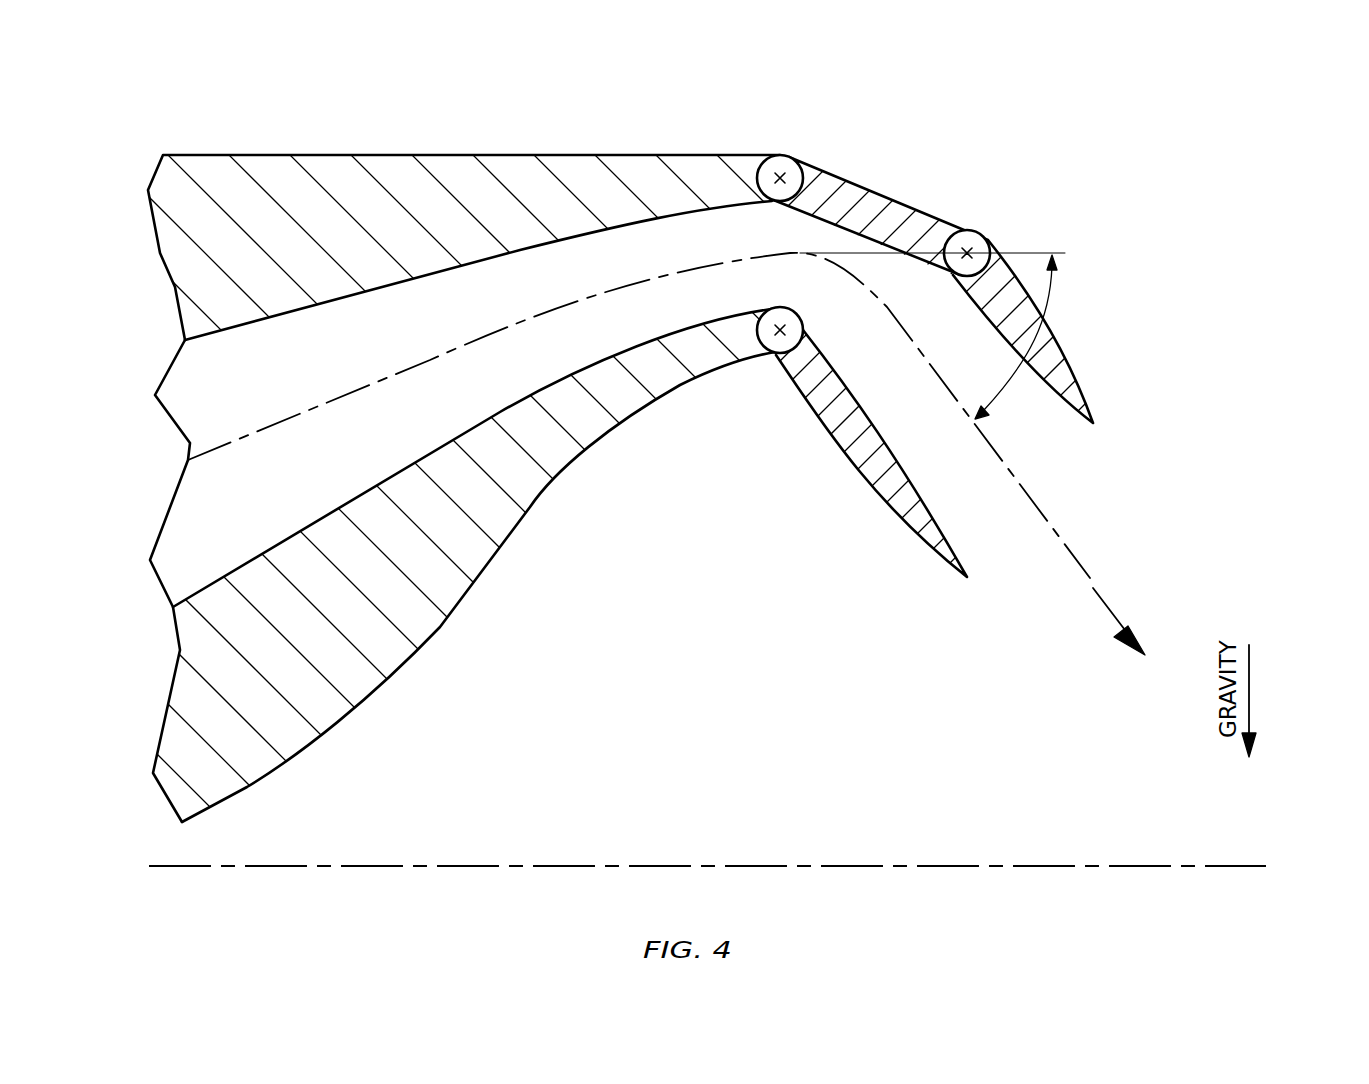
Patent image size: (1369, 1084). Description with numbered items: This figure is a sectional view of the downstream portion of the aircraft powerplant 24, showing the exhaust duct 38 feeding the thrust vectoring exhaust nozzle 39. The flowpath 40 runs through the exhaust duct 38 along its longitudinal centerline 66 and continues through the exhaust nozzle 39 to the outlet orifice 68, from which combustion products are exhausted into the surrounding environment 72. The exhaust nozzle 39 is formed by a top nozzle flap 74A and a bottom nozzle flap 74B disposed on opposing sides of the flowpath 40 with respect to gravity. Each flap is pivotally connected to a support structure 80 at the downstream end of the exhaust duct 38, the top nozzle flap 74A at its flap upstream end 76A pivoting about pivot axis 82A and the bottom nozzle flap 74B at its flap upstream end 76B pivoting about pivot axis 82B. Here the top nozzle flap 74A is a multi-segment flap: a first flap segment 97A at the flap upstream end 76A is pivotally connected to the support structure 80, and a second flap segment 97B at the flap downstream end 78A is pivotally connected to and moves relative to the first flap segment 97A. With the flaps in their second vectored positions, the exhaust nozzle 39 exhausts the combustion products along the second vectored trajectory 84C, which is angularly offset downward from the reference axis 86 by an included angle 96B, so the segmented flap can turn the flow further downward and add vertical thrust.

The aircraft powerplant 24 is at (138, 113).
The exhaust duct 38 is at (487, 259).
The exhaust nozzle 39 is at (1030, 139).
The flowpath 40 is at (182, 560).
The longitudinal centerline 66 is at (216, 447).
The outlet orifice 68 is at (1067, 460).
The environment 72 is at (1240, 288).
The top nozzle flap 74A is at (1006, 226).
The bottom nozzle flap 74B is at (867, 485).
The flap upstream end 76A is at (760, 170).
The flap upstream end 76B is at (753, 318).
The flap downstream end 78A is at (1093, 423).
The support structure 80 is at (664, 156).
The pivot axis 82A is at (783, 178).
The pivot axis 82B is at (783, 334).
The second vectored trajectory 84C is at (1095, 587).
The reference axis 86 is at (1257, 867).
The included angle 96B is at (1052, 293).
The first flap segment 97A is at (884, 196).
The second flap segment 97B is at (1070, 362).